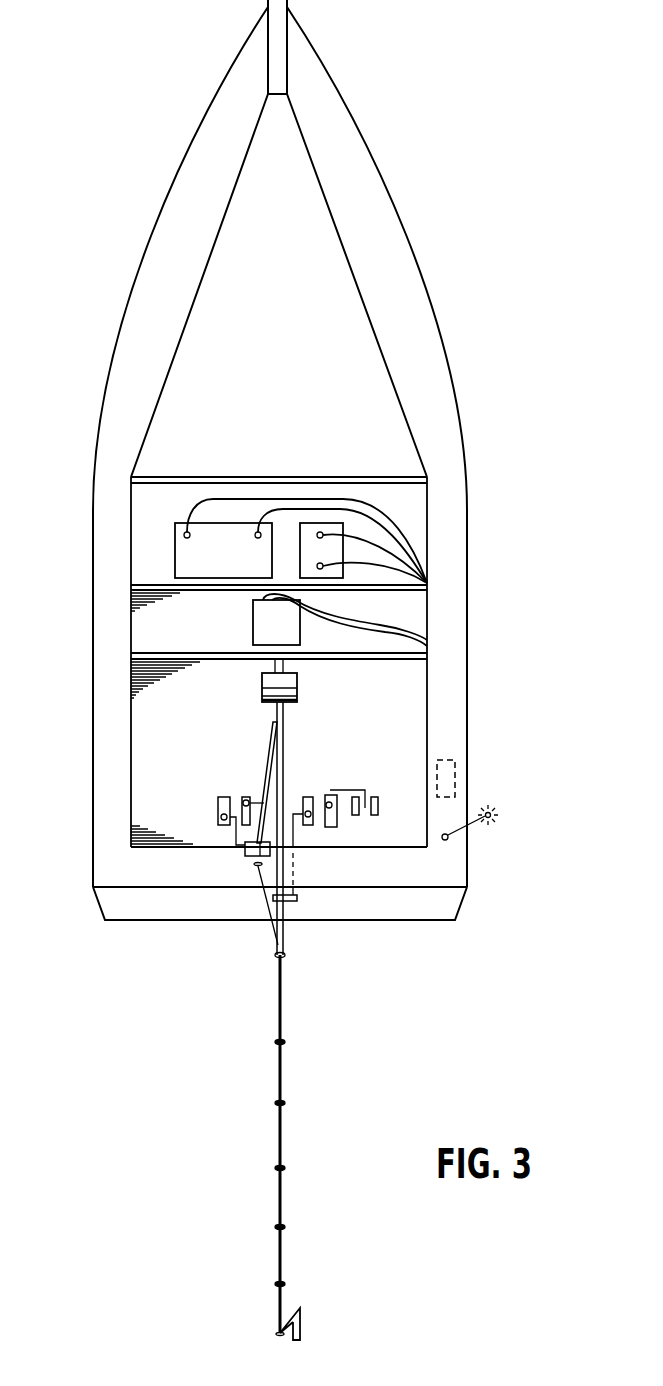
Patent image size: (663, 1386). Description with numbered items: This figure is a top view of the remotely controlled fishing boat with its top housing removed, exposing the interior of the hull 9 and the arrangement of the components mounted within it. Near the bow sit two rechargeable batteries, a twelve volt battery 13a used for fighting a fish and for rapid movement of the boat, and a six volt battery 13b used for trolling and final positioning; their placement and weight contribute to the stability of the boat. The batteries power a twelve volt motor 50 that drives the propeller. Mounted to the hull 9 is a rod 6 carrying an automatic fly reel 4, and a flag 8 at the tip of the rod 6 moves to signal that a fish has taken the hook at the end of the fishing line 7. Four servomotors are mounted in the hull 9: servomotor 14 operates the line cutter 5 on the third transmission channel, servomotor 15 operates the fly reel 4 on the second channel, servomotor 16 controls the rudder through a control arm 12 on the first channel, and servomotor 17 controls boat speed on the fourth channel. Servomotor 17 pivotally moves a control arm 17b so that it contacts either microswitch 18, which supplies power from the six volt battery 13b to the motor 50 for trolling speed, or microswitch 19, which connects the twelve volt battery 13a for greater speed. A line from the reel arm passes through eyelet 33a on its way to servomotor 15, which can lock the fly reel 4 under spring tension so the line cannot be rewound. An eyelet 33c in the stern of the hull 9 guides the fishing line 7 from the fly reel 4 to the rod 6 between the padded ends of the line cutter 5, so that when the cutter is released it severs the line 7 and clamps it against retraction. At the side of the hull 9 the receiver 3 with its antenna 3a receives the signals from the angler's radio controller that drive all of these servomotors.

The hull 9 is at (103, 570).
The 12 volt battery 13a is at (187, 557).
The 6 volt battery 13b is at (316, 527).
The motor 50 is at (267, 627).
The fly reel 4 is at (297, 690).
The rod 6 is at (283, 995).
The flag 8 is at (300, 1320).
The eyelet 33a is at (273, 722).
The line cutter 5 is at (245, 851).
The eyelet 33c is at (256, 865).
The servomotor 14 is at (218, 800).
The servomotor 15 is at (242, 800).
The servomotor 16 is at (305, 797).
The servomotor 17 is at (328, 796).
The control arm 17b is at (367, 788).
The microswitch 18 is at (355, 815).
The microswitch 19 is at (374, 815).
The control arm 12 is at (297, 900).
The fishing line 7 is at (262, 912).
The receiver 3 is at (457, 772).
The antenna 3a is at (477, 812).